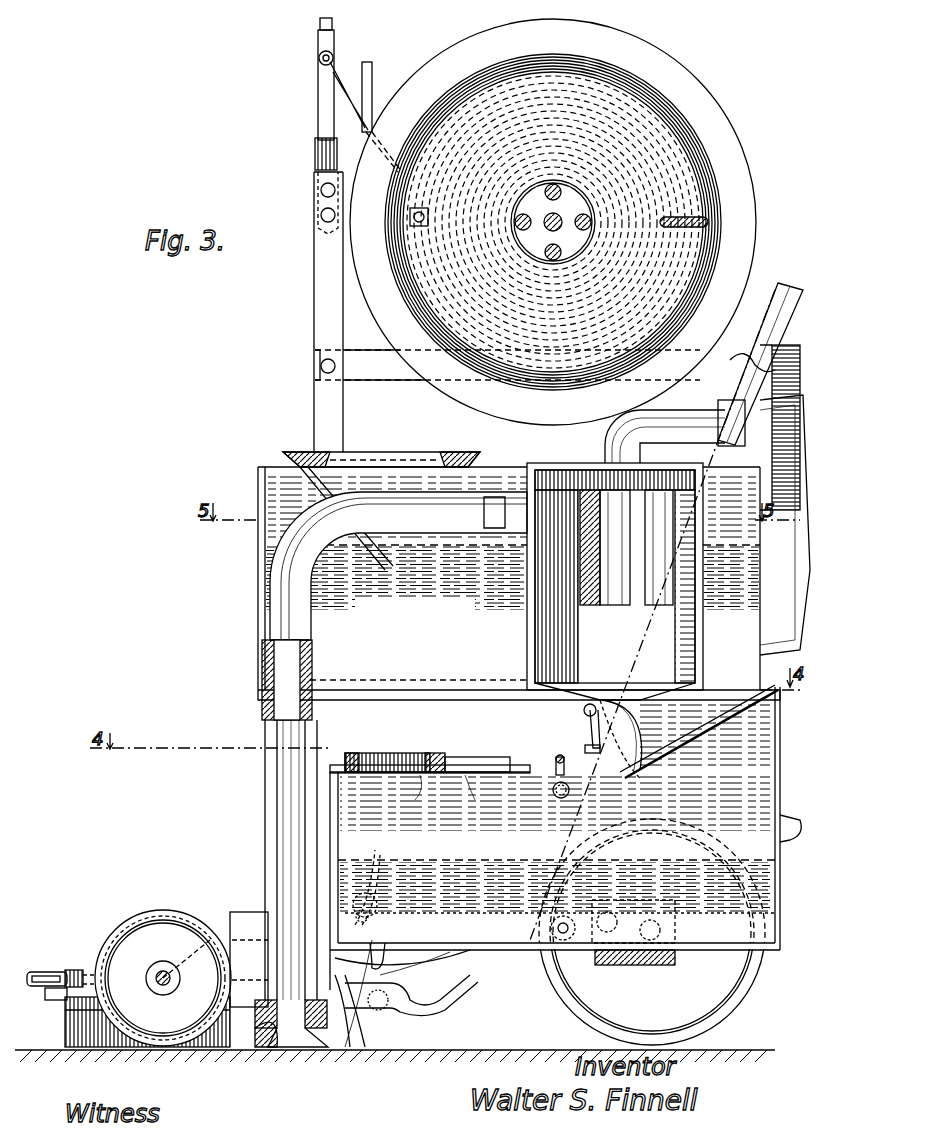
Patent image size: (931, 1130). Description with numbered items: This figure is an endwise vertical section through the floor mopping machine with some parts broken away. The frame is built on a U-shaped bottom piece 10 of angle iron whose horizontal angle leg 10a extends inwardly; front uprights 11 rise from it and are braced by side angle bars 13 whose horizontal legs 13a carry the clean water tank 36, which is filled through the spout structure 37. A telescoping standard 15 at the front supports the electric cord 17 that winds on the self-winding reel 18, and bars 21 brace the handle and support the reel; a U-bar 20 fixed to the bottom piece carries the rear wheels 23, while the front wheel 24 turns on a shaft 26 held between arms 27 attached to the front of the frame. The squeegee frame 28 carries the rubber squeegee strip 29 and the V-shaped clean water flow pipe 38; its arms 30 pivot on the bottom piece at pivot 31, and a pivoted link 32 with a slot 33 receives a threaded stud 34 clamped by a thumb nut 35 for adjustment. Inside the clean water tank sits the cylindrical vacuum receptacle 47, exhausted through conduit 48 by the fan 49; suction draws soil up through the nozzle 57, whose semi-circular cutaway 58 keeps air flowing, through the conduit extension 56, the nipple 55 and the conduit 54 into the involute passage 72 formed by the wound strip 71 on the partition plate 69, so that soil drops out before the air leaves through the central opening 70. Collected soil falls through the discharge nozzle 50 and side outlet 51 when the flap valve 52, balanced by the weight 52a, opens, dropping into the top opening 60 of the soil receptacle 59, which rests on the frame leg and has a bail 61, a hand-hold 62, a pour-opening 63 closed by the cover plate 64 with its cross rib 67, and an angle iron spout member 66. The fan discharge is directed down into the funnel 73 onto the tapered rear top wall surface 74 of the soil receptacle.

The U-shaped bottom piece 10 is at (330, 925).
The horizontal angle leg 10a is at (365, 1020).
The front uprights 11 is at (314, 296).
The side angle bars 13 is at (448, 753).
The horizontal legs of brace bars 13a is at (390, 765).
The telescoping standard 15 is at (334, 40).
The electric cord 17 is at (375, 75).
The self-winding reel 18 is at (637, 56).
The U-bar 20 is at (632, 968).
The bracing bars 21 is at (390, 380).
The rear wheels 23 is at (722, 985).
The front wheel 24 is at (135, 925).
The front wheel shaft 26 is at (165, 960).
The arms 27 is at (232, 915).
The squeegee supporting frame 28 is at (85, 965).
The rubber squeegee strip 29 is at (225, 1047).
The squeegee arms 30 is at (418, 985).
The pivot 31 is at (553, 940).
The pivoted link 32 is at (455, 960).
The slot 33 is at (385, 968).
The threaded stud 34 is at (378, 917).
The thumb nut 35 is at (372, 870).
The clean water tank 36 is at (258, 550).
The spout structure 37 is at (400, 455).
The clean water flow pipe 38 is at (352, 1048).
The vacuum receptacle 47 is at (527, 636).
The exhaust conduit 48 is at (605, 437).
The exhausting fan 49 is at (780, 427).
The discharge nozzle 50 is at (635, 740).
The side outlet 51 is at (566, 765).
The flap valve 52 is at (583, 712).
The weight 52a is at (585, 748).
The soil conduit 54 is at (452, 510).
The nipple 55 is at (262, 695).
The conduit extension 56 is at (265, 780).
The nozzle 57 is at (315, 1047).
The semi-circular cutaway 58 is at (268, 1047).
The soil receptacle 59 is at (780, 795).
The top opening 60 is at (560, 775).
The bail 61 is at (570, 790).
The hand-hold 62 is at (795, 828).
The pour-opening 63 is at (422, 775).
The cover plate 64 is at (470, 775).
The angle iron spout member 66 is at (352, 753).
The cross rib 67 is at (436, 753).
The partition plate 69 is at (660, 470).
The central opening 70 is at (628, 435).
The involutely wound strip 71 is at (585, 606).
The involute passage 72 is at (612, 606).
The funnel 73 is at (770, 504).
The tapered rear top wall surface 74 is at (715, 735).